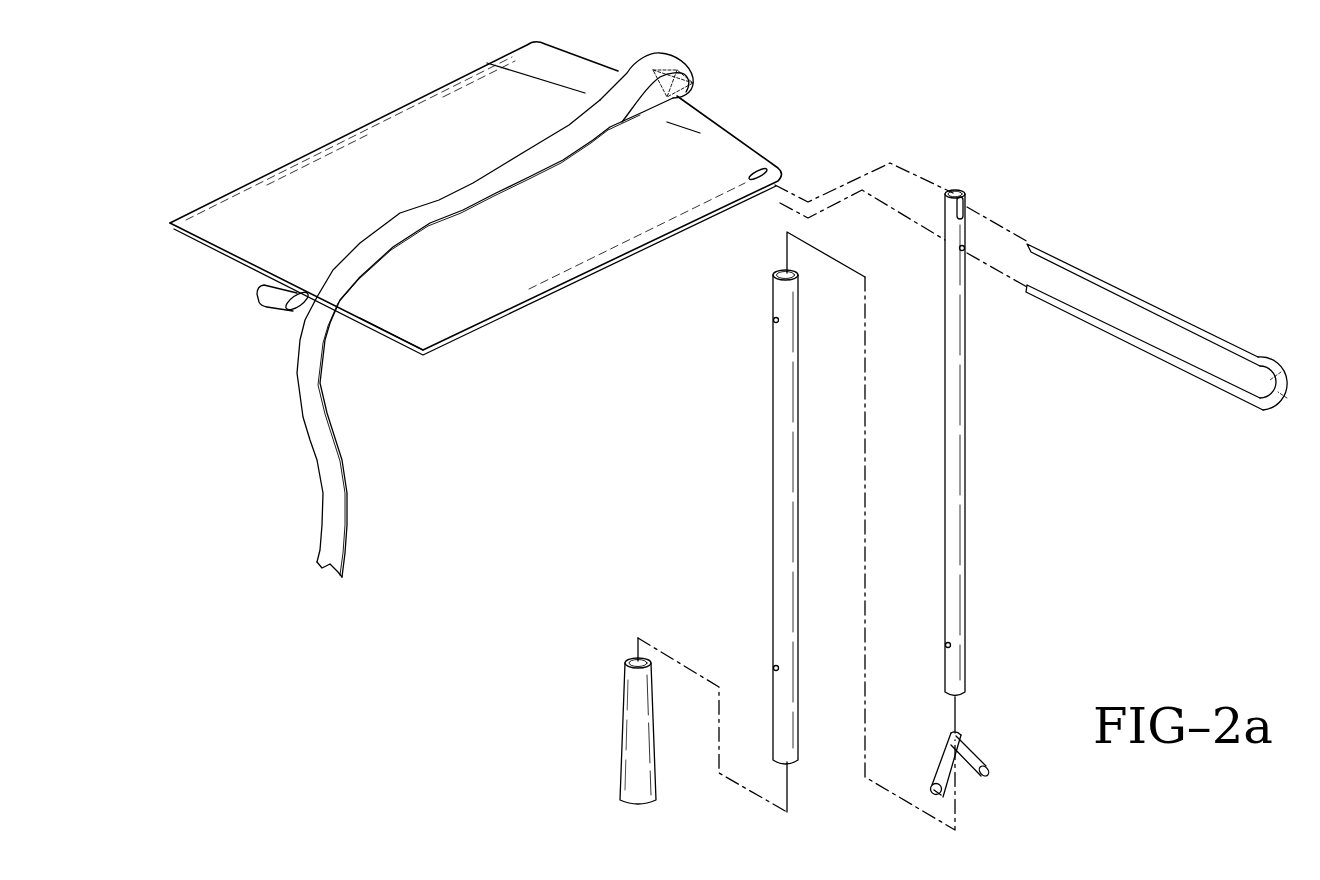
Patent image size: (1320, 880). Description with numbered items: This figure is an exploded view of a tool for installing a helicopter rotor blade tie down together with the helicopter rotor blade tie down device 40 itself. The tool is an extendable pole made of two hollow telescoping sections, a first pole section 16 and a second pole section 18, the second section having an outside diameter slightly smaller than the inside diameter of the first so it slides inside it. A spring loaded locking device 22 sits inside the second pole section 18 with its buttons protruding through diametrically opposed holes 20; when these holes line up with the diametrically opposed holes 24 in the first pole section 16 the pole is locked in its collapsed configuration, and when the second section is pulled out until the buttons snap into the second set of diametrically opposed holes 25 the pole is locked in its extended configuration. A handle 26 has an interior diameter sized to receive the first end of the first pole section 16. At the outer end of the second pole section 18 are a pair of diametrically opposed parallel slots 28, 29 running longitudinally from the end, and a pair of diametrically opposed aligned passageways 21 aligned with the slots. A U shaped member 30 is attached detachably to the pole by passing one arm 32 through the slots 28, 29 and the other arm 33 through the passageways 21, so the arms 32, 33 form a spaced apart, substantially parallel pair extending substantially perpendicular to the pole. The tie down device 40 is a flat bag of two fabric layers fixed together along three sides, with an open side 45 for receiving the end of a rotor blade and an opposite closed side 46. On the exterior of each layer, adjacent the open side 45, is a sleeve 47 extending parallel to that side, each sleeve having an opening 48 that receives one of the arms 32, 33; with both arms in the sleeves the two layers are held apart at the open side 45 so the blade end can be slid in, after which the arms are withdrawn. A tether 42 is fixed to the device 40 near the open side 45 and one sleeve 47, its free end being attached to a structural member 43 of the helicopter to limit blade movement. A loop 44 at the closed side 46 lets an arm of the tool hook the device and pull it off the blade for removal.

The first pole section 16 is at (773, 472).
The second pole section 18 is at (968, 463).
The diametrically opposed holes 20 is at (950, 647).
The passageways 21 is at (961, 250).
The spring loaded locking device 22 is at (968, 752).
The diametrically opposed holes 24 is at (777, 668).
The second set of diametrically opposed holes 25 is at (777, 320).
The handle 26 is at (624, 710).
The slot 28 is at (967, 200).
The slot 29 is at (952, 193).
The U shaped member 30 is at (1255, 356).
The arm 32 is at (1133, 291).
The arm 33 is at (1090, 323).
The helicopter rotor blade tie down device 40 is at (320, 120).
The tether 42 is at (345, 522).
The structural member 43 is at (651, 100).
The loop 44 is at (260, 300).
The open side 45 is at (567, 49).
The closed side 46 is at (392, 338).
The sleeve 47 is at (697, 128).
The opening 48 is at (764, 176).